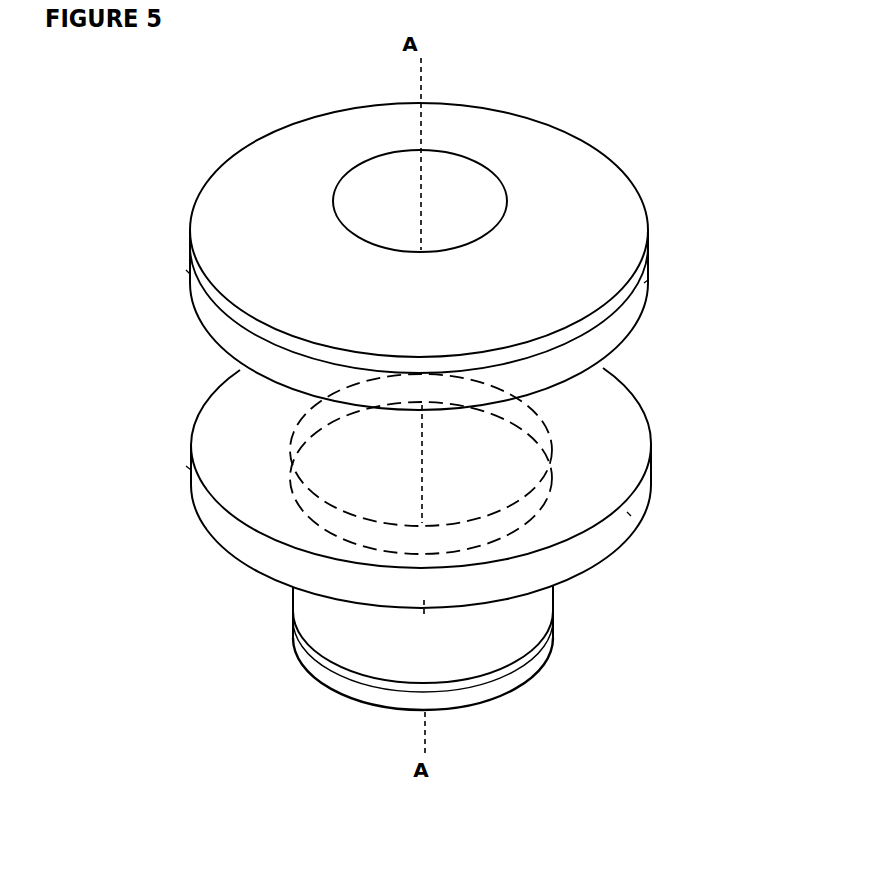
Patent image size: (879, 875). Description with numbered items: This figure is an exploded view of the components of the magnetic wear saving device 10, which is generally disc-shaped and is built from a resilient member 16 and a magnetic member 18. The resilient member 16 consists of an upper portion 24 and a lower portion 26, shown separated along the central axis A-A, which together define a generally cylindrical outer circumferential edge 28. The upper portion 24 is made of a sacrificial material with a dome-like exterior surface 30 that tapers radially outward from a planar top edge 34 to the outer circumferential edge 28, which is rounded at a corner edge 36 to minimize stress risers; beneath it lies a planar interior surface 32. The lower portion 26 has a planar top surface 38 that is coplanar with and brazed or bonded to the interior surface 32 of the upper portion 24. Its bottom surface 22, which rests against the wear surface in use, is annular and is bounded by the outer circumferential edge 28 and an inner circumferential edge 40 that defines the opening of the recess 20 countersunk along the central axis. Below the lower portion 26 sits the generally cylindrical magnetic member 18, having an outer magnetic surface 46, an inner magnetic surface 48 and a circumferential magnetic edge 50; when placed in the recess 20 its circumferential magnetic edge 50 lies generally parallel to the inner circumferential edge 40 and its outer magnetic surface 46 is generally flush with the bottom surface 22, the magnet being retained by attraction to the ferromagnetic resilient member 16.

The magnetic wear saving device 10 is at (651, 118).
The resilient member 16 is at (186, 224).
The magnetic member 18 is at (311, 626).
The recess 20 is at (514, 459).
The bottom surface 22 is at (620, 543).
The upper portion 24 is at (210, 203).
The lower portion 26 is at (198, 396).
The outer circumferential edge 28 is at (190, 277).
The exterior surface 30 is at (598, 186).
The interior surface 32 is at (633, 348).
The planar top edge 34 is at (352, 193).
The corner edge 36 is at (643, 238).
The top surface 38 is at (607, 475).
The inner circumferential edge 40 is at (606, 364).
The outer magnetic surface 46 is at (535, 678).
The inner magnetic surface 48 is at (556, 604).
The circumferential magnetic edge 50 is at (545, 658).